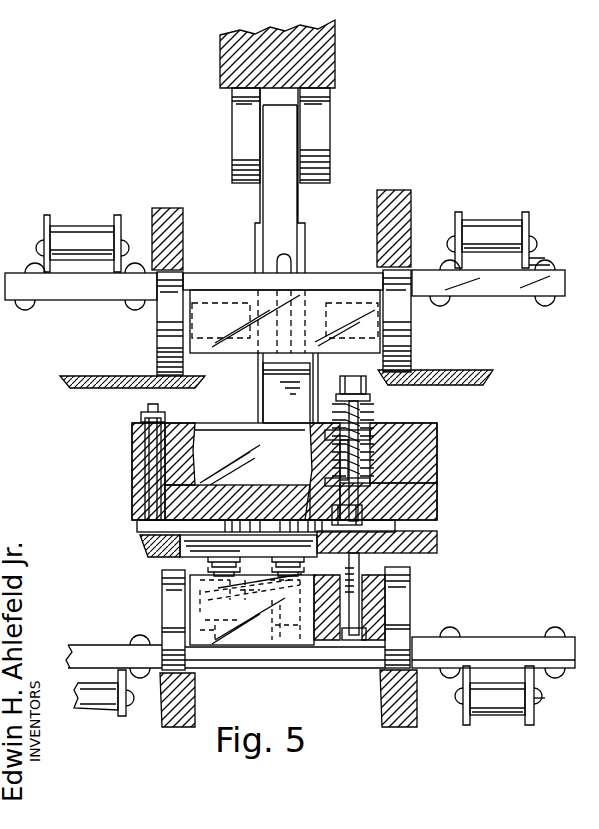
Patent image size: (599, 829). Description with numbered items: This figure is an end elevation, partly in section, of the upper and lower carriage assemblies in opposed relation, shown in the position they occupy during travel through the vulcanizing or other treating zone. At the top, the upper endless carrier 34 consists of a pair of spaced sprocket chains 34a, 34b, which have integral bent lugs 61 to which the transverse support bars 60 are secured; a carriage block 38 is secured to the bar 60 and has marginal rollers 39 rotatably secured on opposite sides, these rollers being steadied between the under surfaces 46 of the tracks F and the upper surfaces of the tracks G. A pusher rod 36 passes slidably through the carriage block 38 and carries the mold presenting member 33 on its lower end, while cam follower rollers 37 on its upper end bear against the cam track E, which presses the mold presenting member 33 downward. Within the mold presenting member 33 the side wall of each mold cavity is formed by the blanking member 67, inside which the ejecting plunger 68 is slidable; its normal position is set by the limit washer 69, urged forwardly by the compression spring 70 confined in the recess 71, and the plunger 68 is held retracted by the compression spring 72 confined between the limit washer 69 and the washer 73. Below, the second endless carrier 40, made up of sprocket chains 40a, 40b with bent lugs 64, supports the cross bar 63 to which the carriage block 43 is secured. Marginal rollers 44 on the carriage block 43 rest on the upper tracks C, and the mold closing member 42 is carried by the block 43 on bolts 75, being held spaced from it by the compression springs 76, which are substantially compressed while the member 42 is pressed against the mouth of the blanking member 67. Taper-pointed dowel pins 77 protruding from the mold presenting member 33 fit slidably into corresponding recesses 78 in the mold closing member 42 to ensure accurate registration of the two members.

The cam track E is at (338, 52).
The cam follower rollers 37 is at (240, 156).
The pusher rods 36 is at (260, 240).
The tracks F is at (152, 238).
The under surfaces of tracks F 46 is at (172, 266).
The marginal rollers 39 is at (157, 342).
The support bars 60 is at (500, 286).
The upper endless carrier 34 is at (44, 222).
The sprocket chain 34a is at (78, 226).
The sprocket chain 34b is at (476, 220).
The bent lugs 61 is at (525, 262).
The carriage blocks 38 is at (240, 356).
The tracks G is at (80, 388).
The mold presenting members 33 is at (437, 436).
The compression spring 70 is at (330, 442).
The limit washer 69 is at (328, 480).
The recess 71 is at (385, 440).
The washer 73 is at (338, 400).
The compression spring 72 is at (366, 420).
The taper-pointed dowel pins 77 is at (145, 482).
The blanking member 67 is at (224, 526).
The ejecting plunger 68 is at (332, 516).
The recesses 78 is at (142, 548).
The mold closing members 42 is at (437, 542).
The compression springs 76 is at (254, 600).
The carriage blocks 43 is at (258, 636).
The bolts 75 is at (352, 642).
The marginal rollers 44 is at (162, 594).
The cross bar 63 is at (525, 644).
The upper tracks C is at (162, 712).
The sprocket chain 40a is at (100, 714).
The sprocket chain 40b is at (511, 730).
The second endless carrier 40 is at (120, 726).
The bent lugs 64 is at (536, 694).